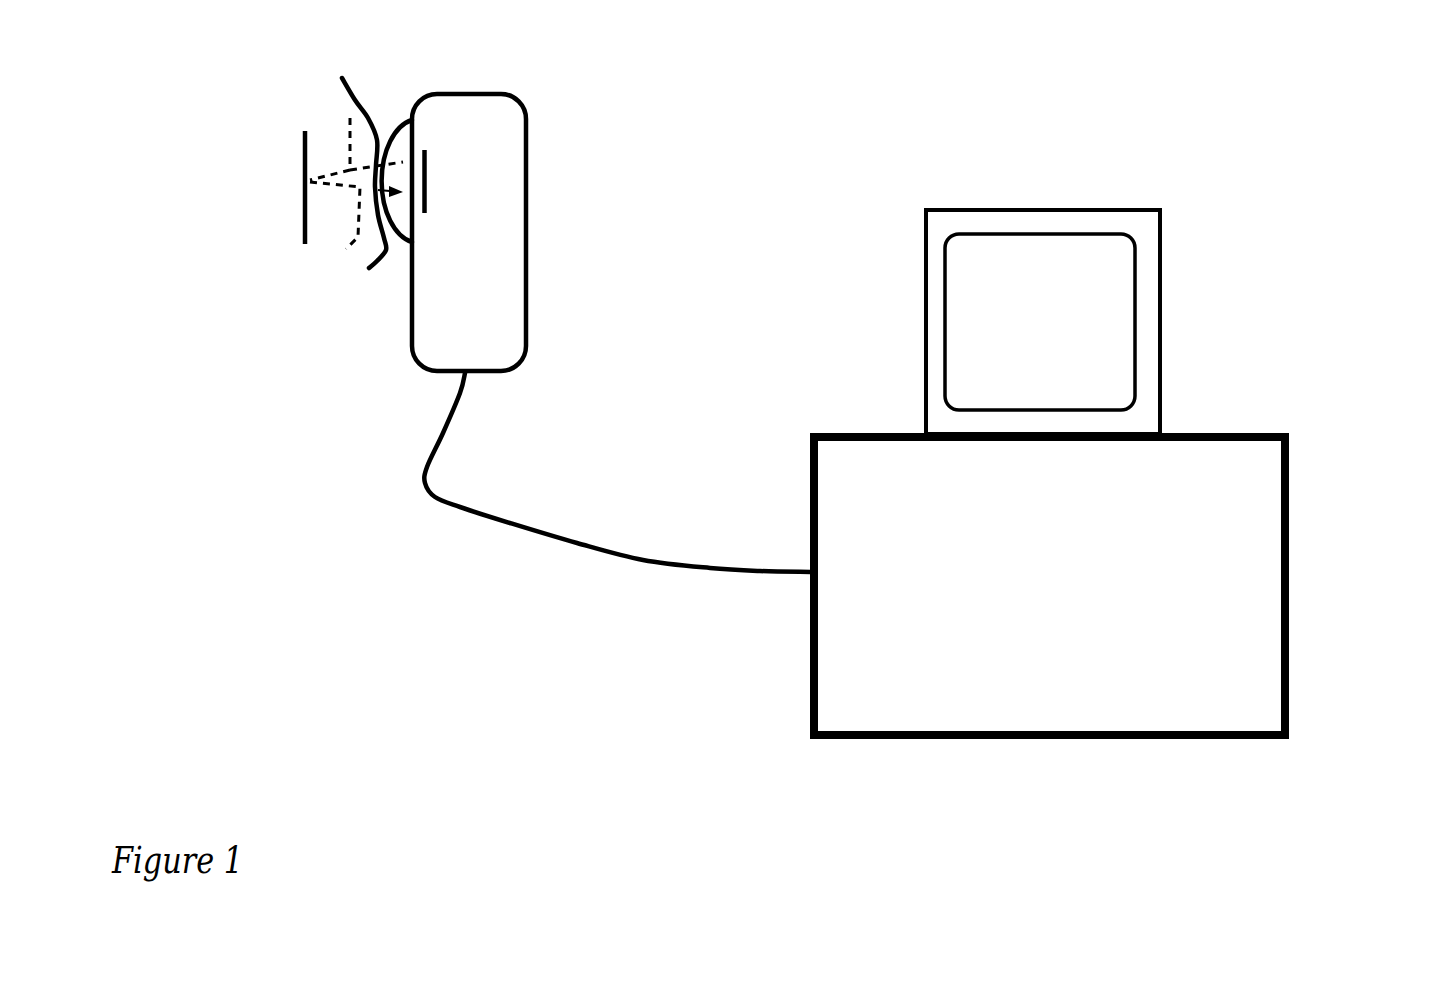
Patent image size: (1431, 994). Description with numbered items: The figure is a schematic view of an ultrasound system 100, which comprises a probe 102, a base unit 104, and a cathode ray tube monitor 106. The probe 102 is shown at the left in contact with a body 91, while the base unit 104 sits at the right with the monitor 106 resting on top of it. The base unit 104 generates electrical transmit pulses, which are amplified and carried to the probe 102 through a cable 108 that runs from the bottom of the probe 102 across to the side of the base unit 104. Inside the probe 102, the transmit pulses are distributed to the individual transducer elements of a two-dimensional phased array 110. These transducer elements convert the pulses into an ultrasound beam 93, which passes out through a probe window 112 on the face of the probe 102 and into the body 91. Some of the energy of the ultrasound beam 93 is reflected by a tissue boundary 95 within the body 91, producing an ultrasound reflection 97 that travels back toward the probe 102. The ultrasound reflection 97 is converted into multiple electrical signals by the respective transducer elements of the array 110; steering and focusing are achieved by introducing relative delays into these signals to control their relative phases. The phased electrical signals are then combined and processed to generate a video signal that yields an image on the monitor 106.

The ultrasound system 100 is at (1325, 782).
The probe 102 is at (475, 331).
The base unit 104 is at (1047, 548).
The cathode ray tube (CRT) monitor 106 is at (1060, 333).
The cable 108 is at (710, 565).
The two-dimensional phased array 110 is at (429, 158).
The probe window 112 is at (405, 122).
The body 91 is at (380, 252).
The ultrasound beam 93 is at (356, 139).
The tissue boundary 95 is at (303, 215).
The ultrasound reflection 97 is at (335, 221).